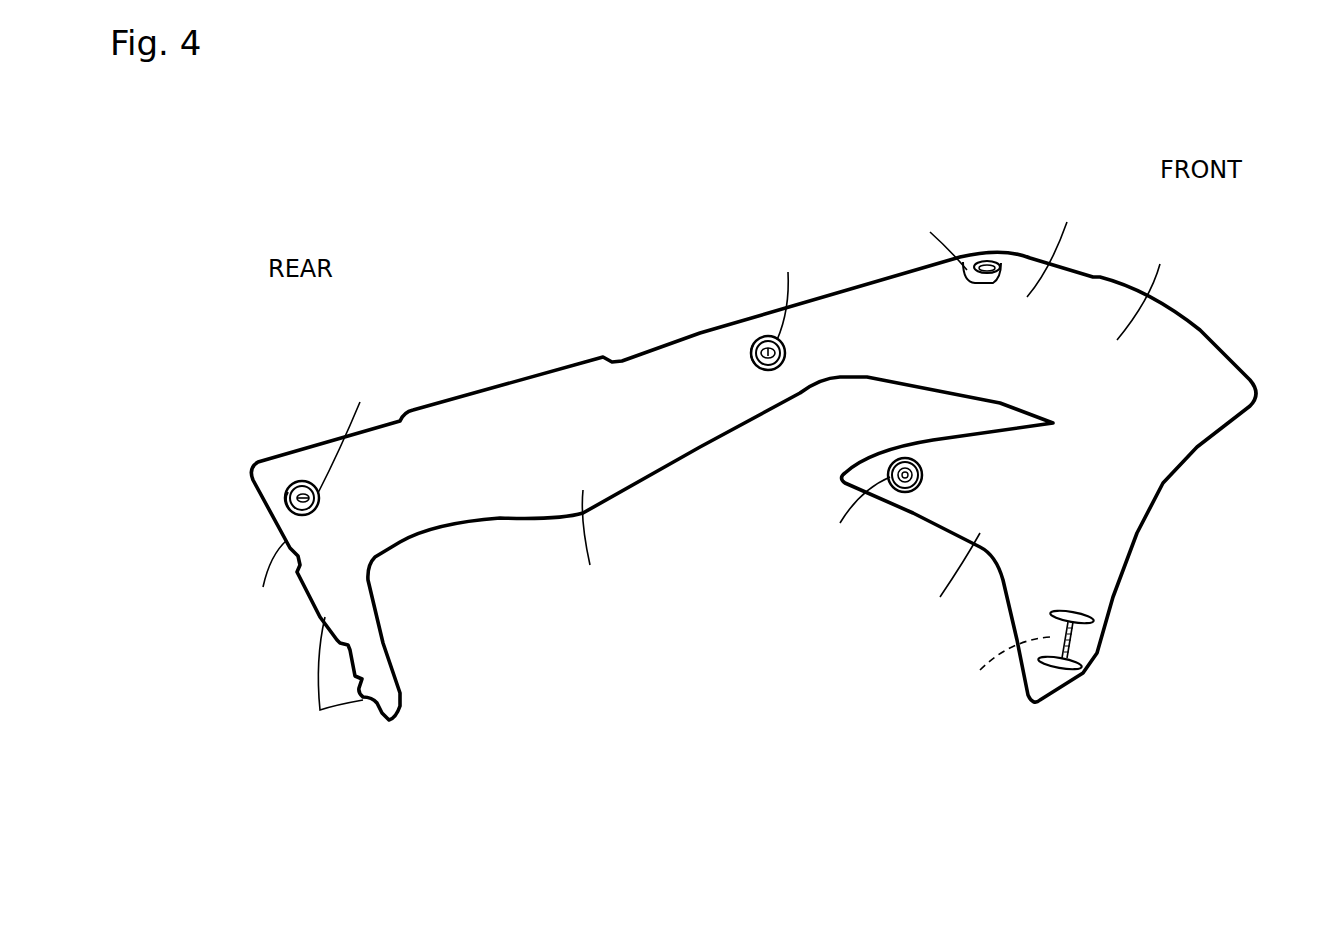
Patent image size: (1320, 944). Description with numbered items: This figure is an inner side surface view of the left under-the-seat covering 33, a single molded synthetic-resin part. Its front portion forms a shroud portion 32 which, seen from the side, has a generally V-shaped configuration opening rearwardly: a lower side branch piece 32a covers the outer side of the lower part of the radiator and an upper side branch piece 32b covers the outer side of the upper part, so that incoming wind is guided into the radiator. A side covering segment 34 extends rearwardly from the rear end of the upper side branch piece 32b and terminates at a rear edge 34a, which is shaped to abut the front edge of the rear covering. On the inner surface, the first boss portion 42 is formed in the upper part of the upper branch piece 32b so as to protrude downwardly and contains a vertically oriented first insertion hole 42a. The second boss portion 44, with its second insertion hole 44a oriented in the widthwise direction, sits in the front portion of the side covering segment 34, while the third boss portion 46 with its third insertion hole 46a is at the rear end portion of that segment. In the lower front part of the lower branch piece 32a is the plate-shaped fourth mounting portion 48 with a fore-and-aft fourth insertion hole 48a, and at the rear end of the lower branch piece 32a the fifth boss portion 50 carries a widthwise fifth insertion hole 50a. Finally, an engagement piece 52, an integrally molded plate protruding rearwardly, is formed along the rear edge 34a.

The under-the-seat covering 33 is at (822, 216).
The shroud portion 32 is at (1147, 288).
The lower side branch piece 32a is at (937, 582).
The upper side branch piece 32b is at (1069, 247).
The side covering segment 34 is at (588, 543).
The rear edge 34a is at (255, 583).
The first boss portion 42 is at (1000, 258).
The first insertion hole 42a is at (930, 235).
The second boss portion 44 is at (750, 347).
The second insertion hole 44a is at (790, 291).
The third boss portion 46 is at (300, 488).
The third insertion hole 46a is at (359, 432).
The fourth mounting portion 48 is at (1073, 635).
The fourth insertion hole 48a is at (989, 670).
The fifth boss portion 50 is at (903, 493).
The fifth insertion hole 50a is at (836, 518).
The engagement piece 52 is at (332, 686).